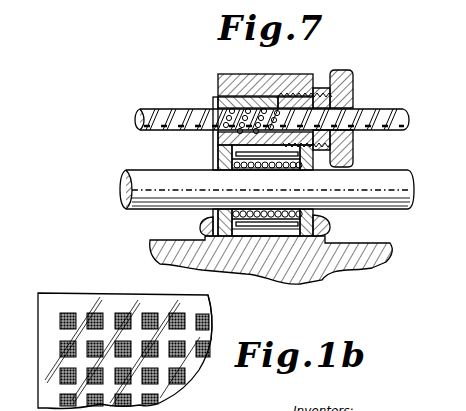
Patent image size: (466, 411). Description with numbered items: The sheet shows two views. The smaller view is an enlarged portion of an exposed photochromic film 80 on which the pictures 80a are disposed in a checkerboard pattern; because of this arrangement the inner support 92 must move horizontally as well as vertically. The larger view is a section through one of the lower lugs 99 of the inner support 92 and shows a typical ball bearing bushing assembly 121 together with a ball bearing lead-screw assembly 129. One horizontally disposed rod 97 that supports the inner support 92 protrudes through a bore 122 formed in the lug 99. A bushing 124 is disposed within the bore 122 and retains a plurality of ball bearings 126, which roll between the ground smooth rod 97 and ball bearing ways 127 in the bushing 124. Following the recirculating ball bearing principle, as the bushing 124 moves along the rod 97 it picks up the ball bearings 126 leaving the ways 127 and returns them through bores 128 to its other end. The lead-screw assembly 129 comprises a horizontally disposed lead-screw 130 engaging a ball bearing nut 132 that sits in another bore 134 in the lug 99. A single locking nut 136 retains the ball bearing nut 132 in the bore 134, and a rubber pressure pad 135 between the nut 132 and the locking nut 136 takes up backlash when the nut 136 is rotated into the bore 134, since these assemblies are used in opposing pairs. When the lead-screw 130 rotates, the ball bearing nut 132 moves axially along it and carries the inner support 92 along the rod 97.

In FIG. 7, the inner support 92 is at (185, 266).
In FIG. 7, the rod 97 is at (130, 170).
In FIG. 7, the lower lug 99 is at (252, 74).
In FIG. 7, the ball bearing bushing assembly 121 is at (154, 217).
In FIG. 7, the bore 122 is at (213, 219).
In FIG. 7, the bushing 124 is at (214, 152).
In FIG. 7, the ball bearings 126 is at (313, 216).
In FIG. 7, the ball bearing ways 127 is at (262, 168).
In FIG. 7, the bores 128 is at (313, 232).
In FIG. 7, the ball bearing lead-screw assembly 129 is at (180, 102).
In FIG. 7, the lead-screw 130 is at (158, 108).
In FIG. 7, the ball bearing nut 132 is at (214, 106).
In FIG. 7, the bore 134 is at (213, 133).
In FIG. 7, the pressure pad 135 is at (278, 97).
In FIG. 7, the locking nut 136 is at (354, 84).
In FIG. 1b, the film 80 is at (70, 292).
In FIG. 1b, the pictures 80a is at (183, 316).